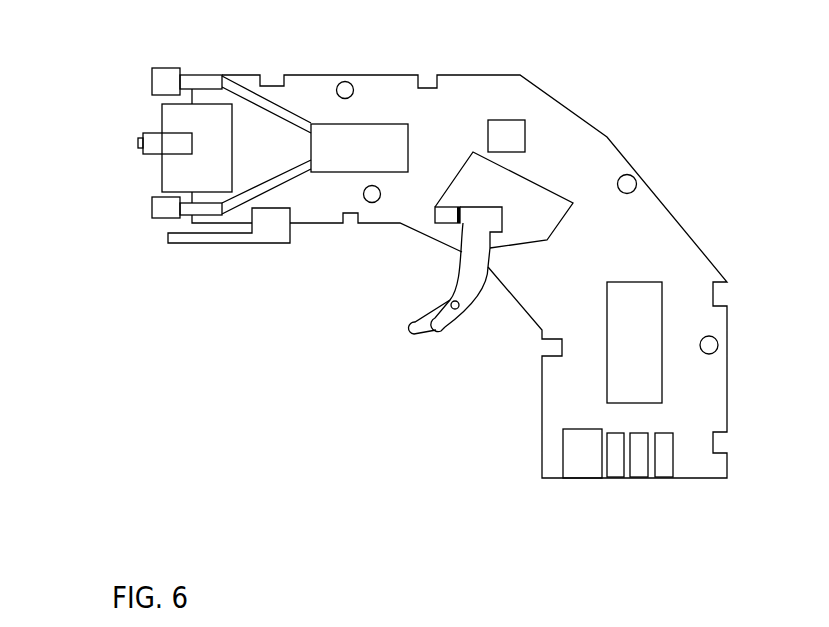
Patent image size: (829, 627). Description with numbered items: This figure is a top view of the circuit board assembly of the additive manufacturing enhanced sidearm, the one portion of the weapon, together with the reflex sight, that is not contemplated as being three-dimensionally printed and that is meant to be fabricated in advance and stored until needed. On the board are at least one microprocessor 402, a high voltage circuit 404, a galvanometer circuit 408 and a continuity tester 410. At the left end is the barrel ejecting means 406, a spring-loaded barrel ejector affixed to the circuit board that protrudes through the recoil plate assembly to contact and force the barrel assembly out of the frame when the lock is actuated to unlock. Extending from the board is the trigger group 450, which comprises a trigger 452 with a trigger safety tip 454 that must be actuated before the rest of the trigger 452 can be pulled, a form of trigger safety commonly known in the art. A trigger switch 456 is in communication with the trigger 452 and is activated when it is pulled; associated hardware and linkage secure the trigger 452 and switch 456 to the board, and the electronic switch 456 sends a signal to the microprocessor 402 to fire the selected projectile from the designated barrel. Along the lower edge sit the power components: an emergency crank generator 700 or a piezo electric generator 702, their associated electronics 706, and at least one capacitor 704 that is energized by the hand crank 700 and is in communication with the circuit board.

The microprocessor 402 is at (647, 281).
The high voltage circuit 404 is at (397, 123).
The barrel ejecting means 406 is at (152, 155).
The galvanometer circuit 408 is at (604, 94).
The continuity tester 410 is at (527, 124).
The trigger group 450 is at (492, 186).
The trigger 452 is at (448, 334).
The trigger safety tip 454 is at (408, 336).
The trigger switch 456 is at (435, 218).
The emergency crank generator 700 is at (514, 492).
The piezo electric generator 702 is at (572, 479).
The capacitor 704 is at (618, 479).
The associated electronics 706 is at (668, 479).